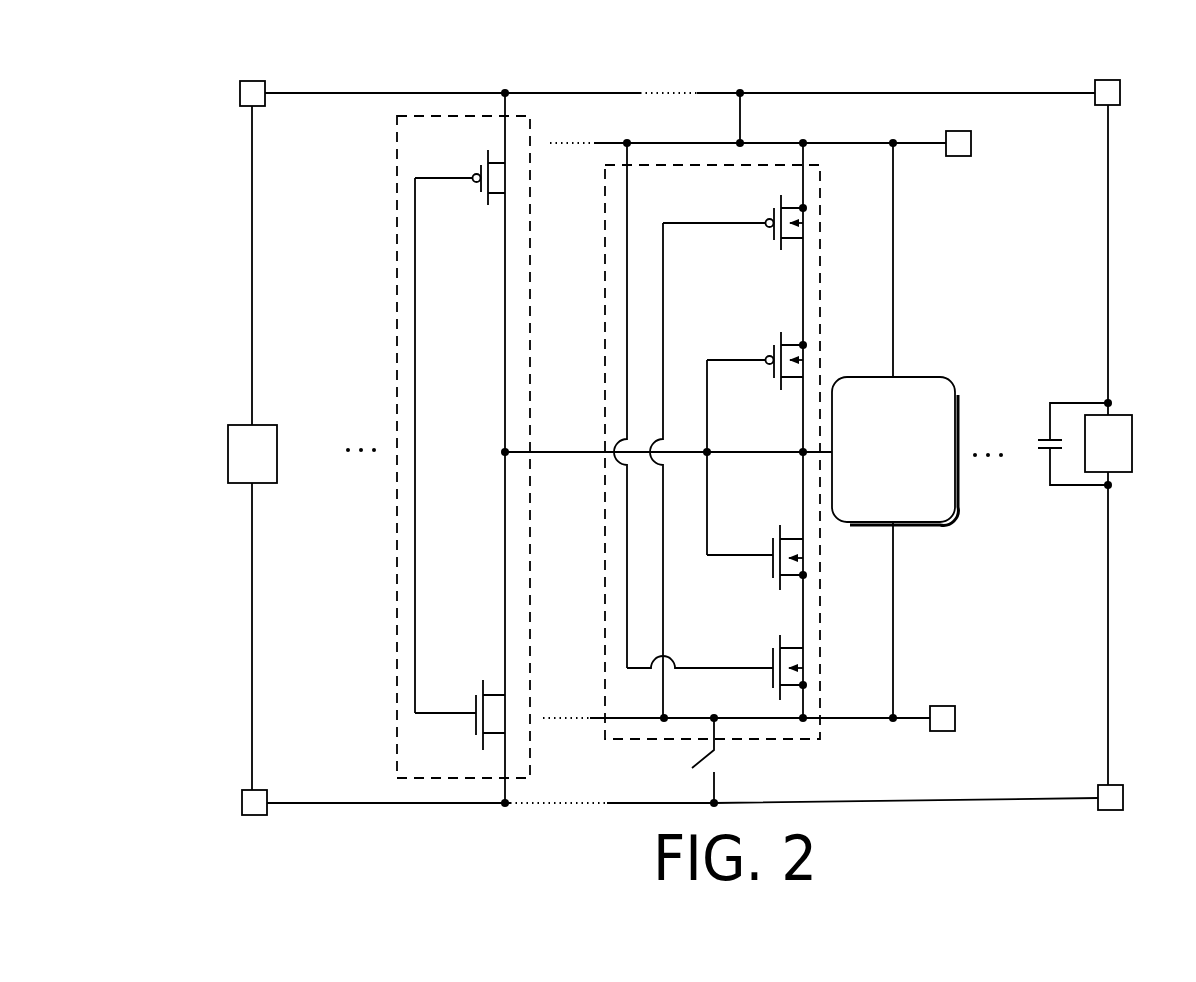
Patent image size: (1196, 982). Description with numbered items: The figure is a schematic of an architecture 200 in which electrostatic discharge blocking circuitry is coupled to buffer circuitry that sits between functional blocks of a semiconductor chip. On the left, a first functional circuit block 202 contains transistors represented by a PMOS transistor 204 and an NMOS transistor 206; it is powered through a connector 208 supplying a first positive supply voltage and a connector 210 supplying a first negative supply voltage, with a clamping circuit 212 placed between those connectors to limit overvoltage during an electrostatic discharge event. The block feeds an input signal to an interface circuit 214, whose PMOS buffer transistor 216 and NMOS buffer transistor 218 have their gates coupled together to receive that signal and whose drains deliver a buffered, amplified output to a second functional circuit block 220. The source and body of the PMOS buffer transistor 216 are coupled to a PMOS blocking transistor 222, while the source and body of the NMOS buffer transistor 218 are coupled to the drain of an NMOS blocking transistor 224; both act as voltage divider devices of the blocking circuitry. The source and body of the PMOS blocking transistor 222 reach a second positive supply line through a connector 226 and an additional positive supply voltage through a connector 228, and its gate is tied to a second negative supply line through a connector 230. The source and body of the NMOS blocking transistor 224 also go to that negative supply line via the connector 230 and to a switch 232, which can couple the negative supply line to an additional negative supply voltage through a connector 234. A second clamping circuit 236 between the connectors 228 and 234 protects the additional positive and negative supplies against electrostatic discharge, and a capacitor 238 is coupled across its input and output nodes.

The architecture 200 is at (205, 50).
The first functional circuit block 202 is at (396, 242).
The PMOS transistor 204 is at (486, 152).
The NMOS transistor 206 is at (482, 681).
The connector 208 is at (240, 100).
The connector 210 is at (242, 806).
The clamping circuit 212 is at (268, 425).
The interface circuit 214 is at (606, 237).
The PMOS buffer transistor 216 is at (780, 333).
The NMOS buffer transistor 218 is at (779, 530).
The second functional circuit block 220 is at (895, 451).
The PMOS blocking transistor 222 is at (781, 250).
The NMOS blocking transistor 224 is at (779, 640).
The connector 226 is at (968, 156).
The connector 228 is at (1120, 96).
The connector 230 is at (954, 730).
The switch 232 is at (718, 788).
The connector 234 is at (1123, 800).
The second clamping circuit 236 is at (1132, 440).
The capacitor 238 is at (1045, 440).